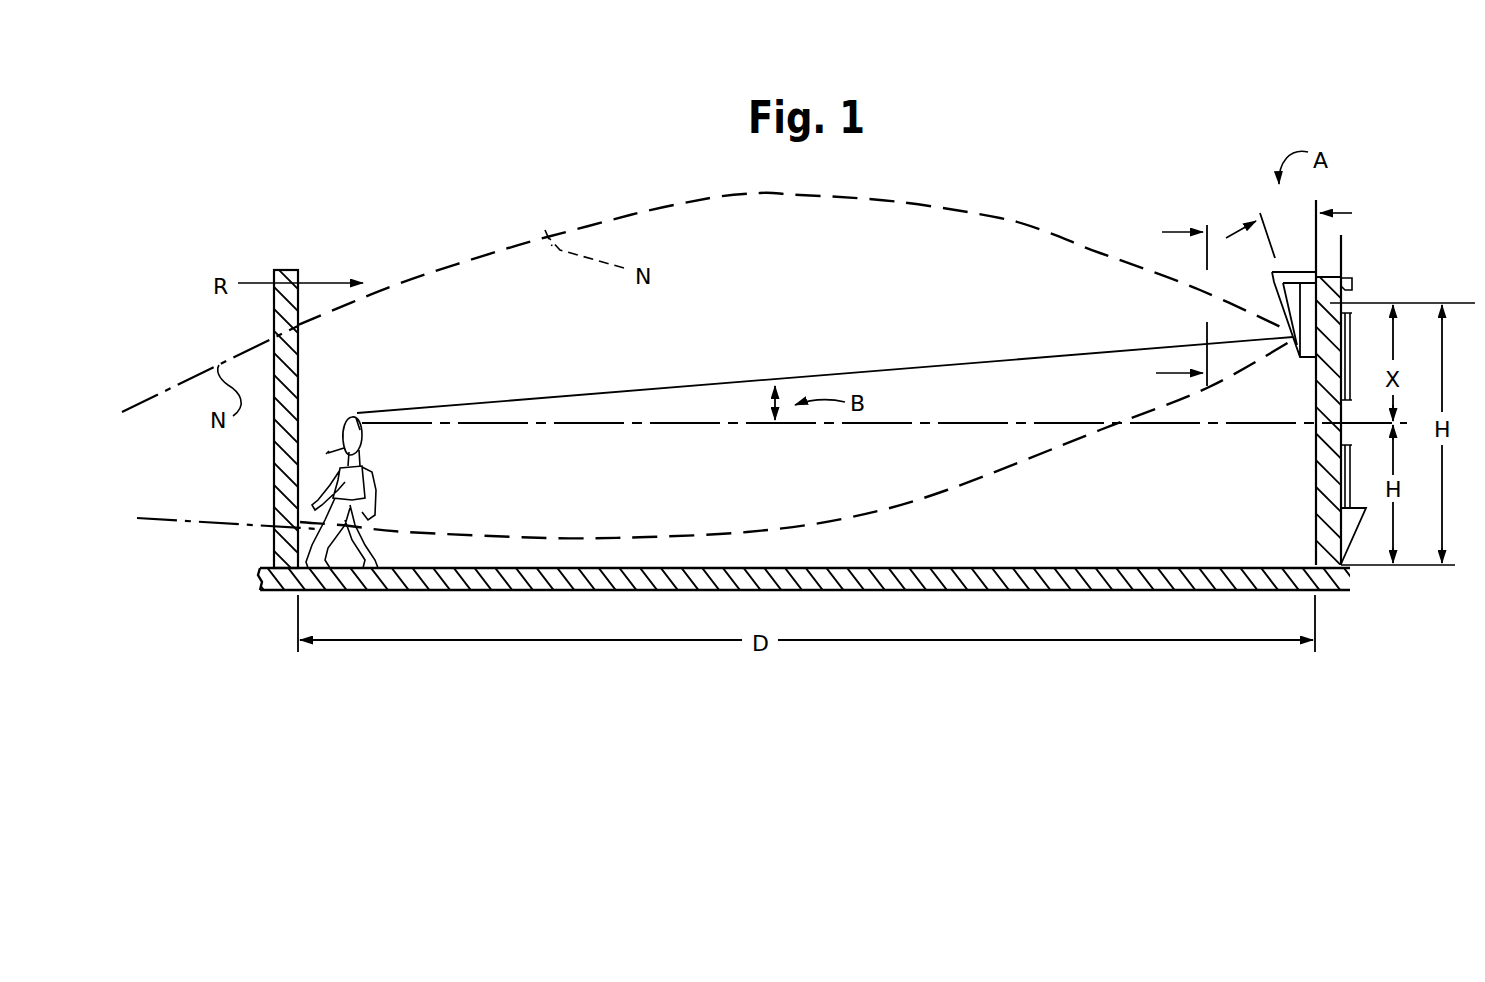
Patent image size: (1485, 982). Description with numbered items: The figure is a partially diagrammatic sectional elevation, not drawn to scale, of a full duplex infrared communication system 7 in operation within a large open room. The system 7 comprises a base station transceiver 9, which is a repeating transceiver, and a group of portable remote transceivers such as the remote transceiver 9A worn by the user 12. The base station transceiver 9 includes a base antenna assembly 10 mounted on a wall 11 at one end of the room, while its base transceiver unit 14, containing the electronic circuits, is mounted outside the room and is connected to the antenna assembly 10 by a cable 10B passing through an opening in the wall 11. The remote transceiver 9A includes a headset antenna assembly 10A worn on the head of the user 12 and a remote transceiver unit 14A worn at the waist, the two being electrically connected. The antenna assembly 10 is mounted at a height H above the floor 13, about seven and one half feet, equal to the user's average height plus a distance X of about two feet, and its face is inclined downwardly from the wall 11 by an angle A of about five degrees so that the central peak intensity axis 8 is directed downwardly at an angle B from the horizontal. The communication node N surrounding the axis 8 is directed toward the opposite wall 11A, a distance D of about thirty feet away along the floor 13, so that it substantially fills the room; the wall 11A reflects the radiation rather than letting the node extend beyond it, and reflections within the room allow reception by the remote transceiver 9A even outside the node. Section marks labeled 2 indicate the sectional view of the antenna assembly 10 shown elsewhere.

The full duplex infrared communication system 7 is at (413, 675).
The central peak intensity axis 8 is at (686, 387).
The base station transceiver 9 is at (1297, 505).
The remote transceiver 9A is at (386, 462).
The base antenna assembly 10 is at (1238, 210).
The headset antenna assembly 10A is at (346, 410).
The cable 10B is at (1353, 285).
The wall 11 is at (1328, 460).
The opposite wall 11A is at (283, 307).
The user 12 is at (336, 462).
The floor 13 is at (905, 568).
The base transceiver unit 14 is at (1356, 530).
The remote transceiver unit 14A is at (795, 453).
The section line for FIG. 2 is at (1163, 308).